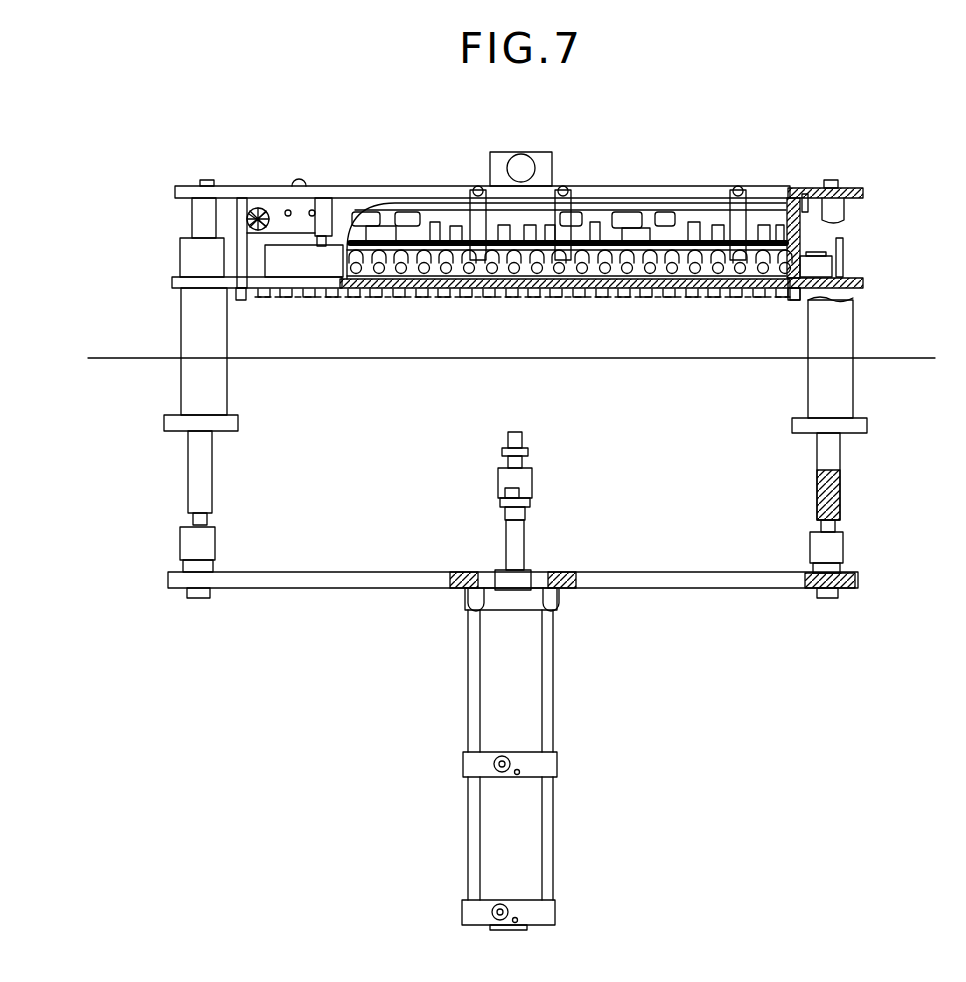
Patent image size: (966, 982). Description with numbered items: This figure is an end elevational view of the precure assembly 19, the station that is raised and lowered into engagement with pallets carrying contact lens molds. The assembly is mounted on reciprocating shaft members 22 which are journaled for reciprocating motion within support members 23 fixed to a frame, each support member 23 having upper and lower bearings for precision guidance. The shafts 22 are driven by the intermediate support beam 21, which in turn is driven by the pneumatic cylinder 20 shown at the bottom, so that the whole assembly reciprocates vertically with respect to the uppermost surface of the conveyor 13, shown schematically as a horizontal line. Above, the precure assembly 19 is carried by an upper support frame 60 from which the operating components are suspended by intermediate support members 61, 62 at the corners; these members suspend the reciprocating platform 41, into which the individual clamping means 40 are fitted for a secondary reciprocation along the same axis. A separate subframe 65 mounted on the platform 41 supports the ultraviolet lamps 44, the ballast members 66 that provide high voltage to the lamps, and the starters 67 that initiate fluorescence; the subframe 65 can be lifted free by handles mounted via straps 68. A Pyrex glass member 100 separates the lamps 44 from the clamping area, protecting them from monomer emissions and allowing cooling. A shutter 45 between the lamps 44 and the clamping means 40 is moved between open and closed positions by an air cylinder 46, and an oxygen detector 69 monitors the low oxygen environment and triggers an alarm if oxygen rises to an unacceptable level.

The conveyor 13 is at (630, 358).
The precure assembly 19 is at (396, 150).
The pneumatic cylinder 20 is at (526, 838).
The intermediate support beam 21 is at (344, 588).
The reciprocating shaft members 22 is at (194, 216).
The support member 23 is at (198, 336).
The clamping means 40 is at (268, 298).
The reciprocating platform 41 is at (864, 282).
The ultraviolet lamps 44 is at (402, 275).
The shutter 45 is at (472, 290).
The air cylinder 46 is at (824, 250).
The upper support frame 60 is at (348, 190).
The intermediate support member 61 is at (255, 206).
The intermediate support member 62 is at (790, 205).
The subframe 65 is at (350, 253).
The ballast members 66 is at (400, 234).
The starters 67 is at (508, 272).
The straps 68 is at (478, 188).
The oxygen detector 69 is at (524, 152).
The Pyrex glass member 100 is at (788, 300).